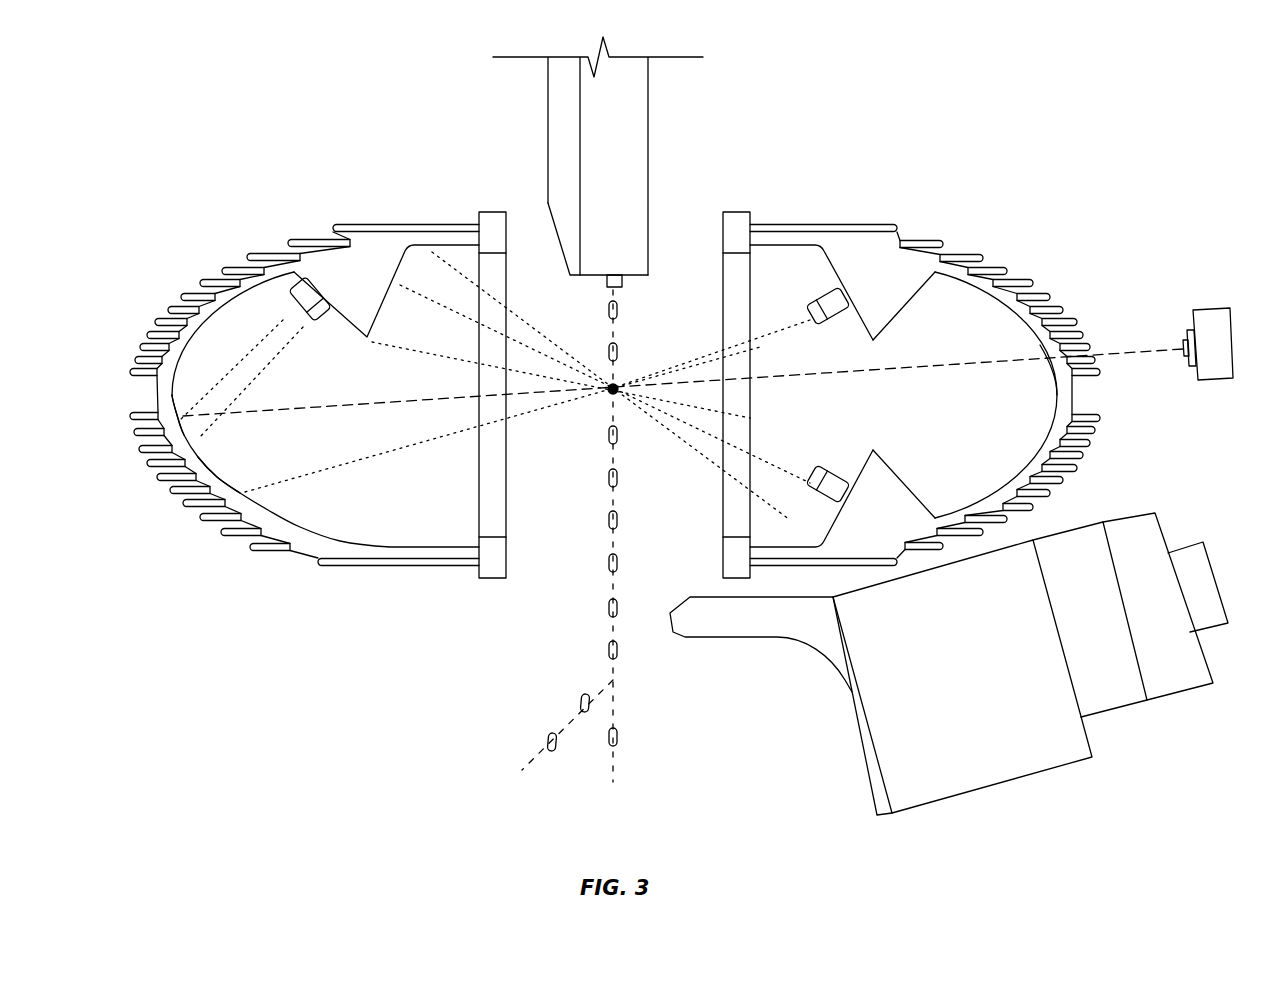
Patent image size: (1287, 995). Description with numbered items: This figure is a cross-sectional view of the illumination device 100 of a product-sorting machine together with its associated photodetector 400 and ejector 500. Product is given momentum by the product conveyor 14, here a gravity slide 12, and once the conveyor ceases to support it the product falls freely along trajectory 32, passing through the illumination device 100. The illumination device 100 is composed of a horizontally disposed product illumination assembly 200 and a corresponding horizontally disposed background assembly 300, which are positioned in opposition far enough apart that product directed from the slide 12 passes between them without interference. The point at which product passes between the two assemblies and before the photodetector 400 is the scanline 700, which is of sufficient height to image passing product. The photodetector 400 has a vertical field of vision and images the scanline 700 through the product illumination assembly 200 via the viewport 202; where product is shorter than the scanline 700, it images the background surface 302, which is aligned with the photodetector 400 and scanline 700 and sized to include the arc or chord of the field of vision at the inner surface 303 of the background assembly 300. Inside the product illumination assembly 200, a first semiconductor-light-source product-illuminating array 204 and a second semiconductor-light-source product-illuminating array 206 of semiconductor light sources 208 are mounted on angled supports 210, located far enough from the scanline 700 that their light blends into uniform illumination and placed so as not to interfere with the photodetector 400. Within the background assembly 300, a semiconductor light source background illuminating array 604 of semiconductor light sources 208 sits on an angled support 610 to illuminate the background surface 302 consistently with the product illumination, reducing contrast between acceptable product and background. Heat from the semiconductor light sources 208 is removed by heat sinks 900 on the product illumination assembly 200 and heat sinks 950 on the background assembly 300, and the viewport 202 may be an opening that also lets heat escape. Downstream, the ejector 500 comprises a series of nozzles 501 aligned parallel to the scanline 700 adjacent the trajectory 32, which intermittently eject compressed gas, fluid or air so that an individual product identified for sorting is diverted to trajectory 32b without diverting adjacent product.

The illumination device 100 is at (196, 92).
The product conveyor 14 is at (522, 115).
The slide 12 is at (545, 170).
The trajectory 32 is at (613, 782).
The diverted trajectory 32b is at (520, 770).
The scanline 700 is at (612, 392).
The background assembly 300 is at (147, 310).
The heat sinks 950 is at (333, 229).
The semiconductor light source background illuminating array 604 is at (270, 312).
The background surface 302 is at (183, 418).
The inner surface 303 is at (222, 470).
The support 610 is at (320, 285).
The semiconductor light sources 208 is at (310, 320).
The product illumination assembly 200 is at (1093, 268).
The heat sinks 900 is at (900, 230).
The viewport 202 is at (1078, 330).
The first semiconductor-light-source product-illuminating array 204 is at (808, 300).
The second semiconductor-light-source product-illuminating array 206 is at (805, 490).
The supports 210 is at (882, 305).
The photodetector 400 is at (1210, 308).
The ejector 500 is at (1050, 750).
The nozzles 501 is at (672, 645).